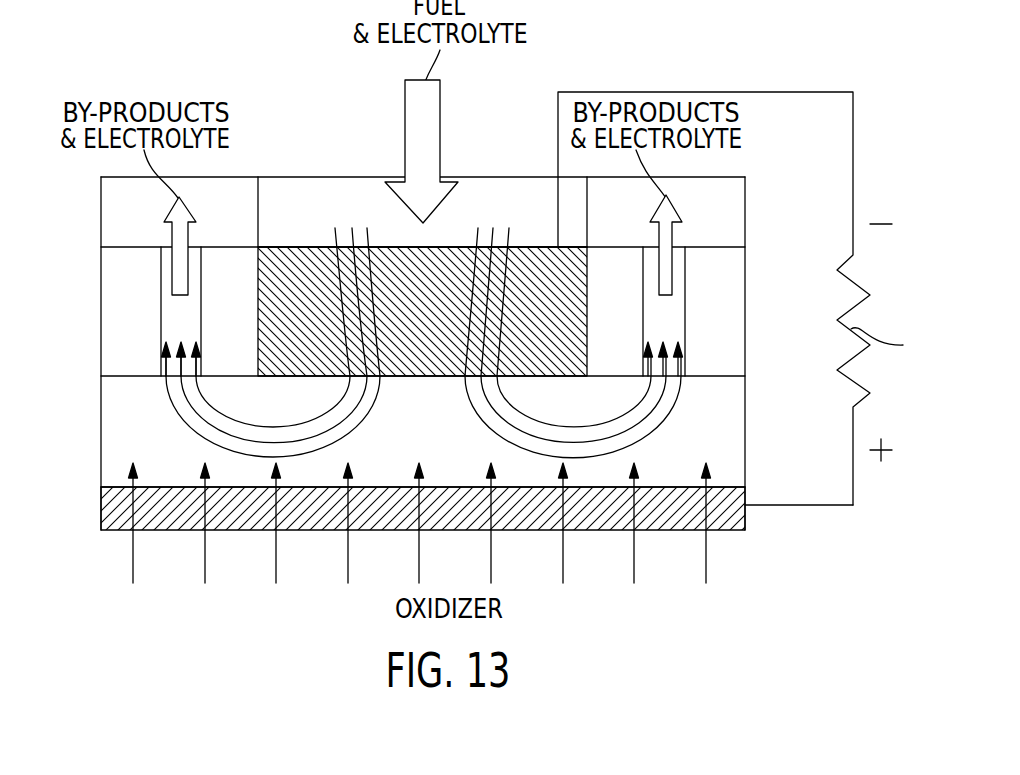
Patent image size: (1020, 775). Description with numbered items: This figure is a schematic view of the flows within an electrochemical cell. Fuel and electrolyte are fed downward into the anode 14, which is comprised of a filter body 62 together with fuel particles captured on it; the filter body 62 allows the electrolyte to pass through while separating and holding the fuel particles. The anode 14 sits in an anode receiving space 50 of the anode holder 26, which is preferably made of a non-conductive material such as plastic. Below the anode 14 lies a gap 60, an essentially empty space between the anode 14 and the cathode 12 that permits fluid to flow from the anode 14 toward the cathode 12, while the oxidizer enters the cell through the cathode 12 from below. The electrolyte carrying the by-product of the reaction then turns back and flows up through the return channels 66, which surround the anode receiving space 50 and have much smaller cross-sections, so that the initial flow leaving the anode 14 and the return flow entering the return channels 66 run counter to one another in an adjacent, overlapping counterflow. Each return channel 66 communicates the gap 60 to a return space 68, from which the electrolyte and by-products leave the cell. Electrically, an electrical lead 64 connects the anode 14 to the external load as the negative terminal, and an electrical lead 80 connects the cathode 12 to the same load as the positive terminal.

The cathode 12 is at (105, 515).
The anode 14 is at (298, 245).
The anode holder 26 is at (110, 305).
The anode receiving space 50 is at (498, 195).
The gap 60 is at (110, 428).
The filter body 62 is at (360, 243).
The electrical lead 64 is at (725, 90).
The return channels 66 is at (163, 323).
The return space 68 is at (110, 203).
The electrical lead 80 is at (787, 507).